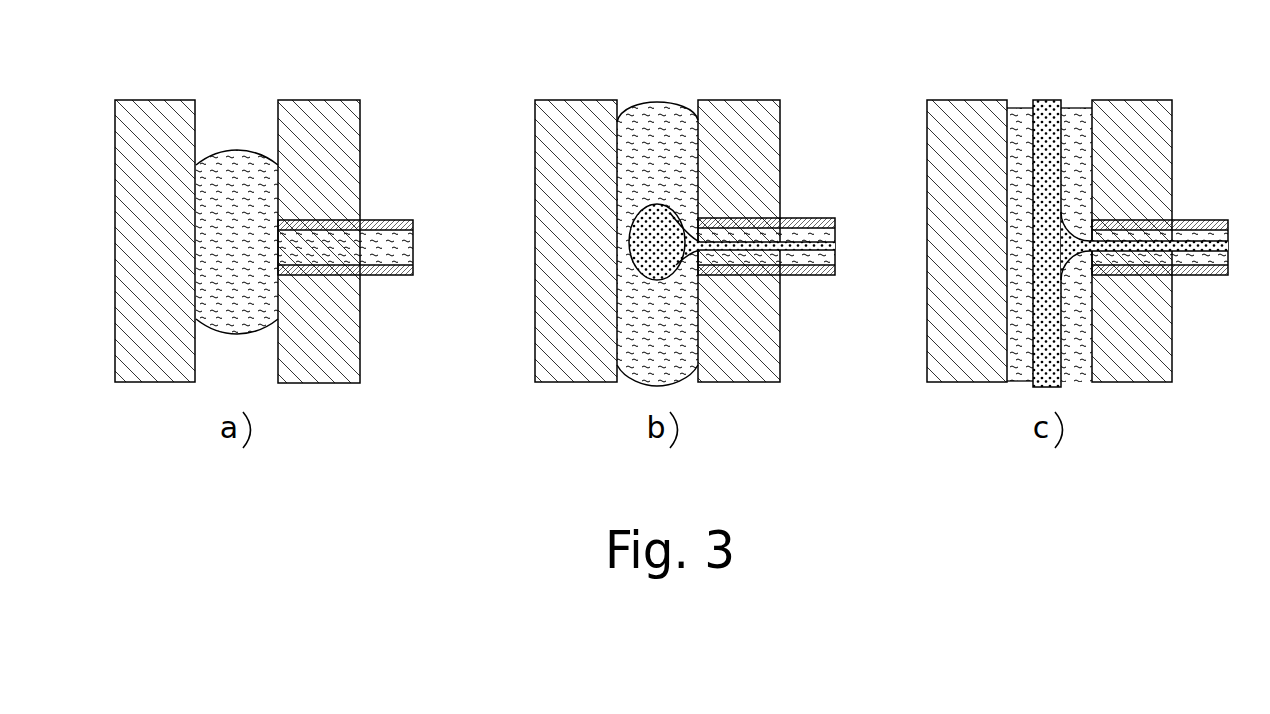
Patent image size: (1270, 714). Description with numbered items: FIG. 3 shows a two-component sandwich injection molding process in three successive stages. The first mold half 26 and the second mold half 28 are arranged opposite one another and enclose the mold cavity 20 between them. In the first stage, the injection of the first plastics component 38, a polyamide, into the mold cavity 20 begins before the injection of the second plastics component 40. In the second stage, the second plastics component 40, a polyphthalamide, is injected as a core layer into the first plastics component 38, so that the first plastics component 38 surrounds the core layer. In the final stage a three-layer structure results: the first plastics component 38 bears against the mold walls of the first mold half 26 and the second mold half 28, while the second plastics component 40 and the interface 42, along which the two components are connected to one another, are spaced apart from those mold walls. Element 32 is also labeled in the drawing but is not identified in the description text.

The mold cavity 20 is at (237, 221).
The first mold half 26 is at (150, 127).
The second mold half 28 is at (343, 148).
The channel 32 is at (340, 250).
The first plastics component 38 is at (255, 163).
The second plastics component 40 is at (812, 236).
The interface 42 is at (1035, 347).